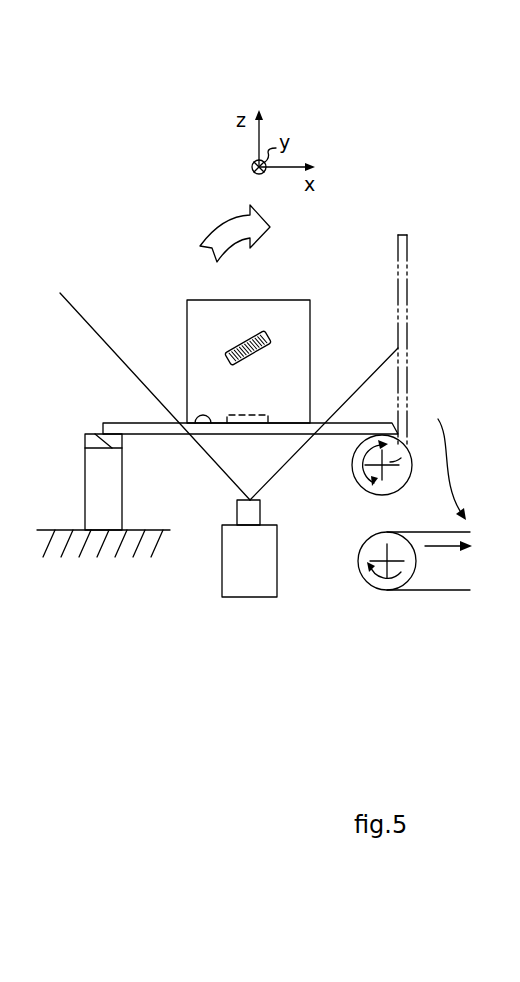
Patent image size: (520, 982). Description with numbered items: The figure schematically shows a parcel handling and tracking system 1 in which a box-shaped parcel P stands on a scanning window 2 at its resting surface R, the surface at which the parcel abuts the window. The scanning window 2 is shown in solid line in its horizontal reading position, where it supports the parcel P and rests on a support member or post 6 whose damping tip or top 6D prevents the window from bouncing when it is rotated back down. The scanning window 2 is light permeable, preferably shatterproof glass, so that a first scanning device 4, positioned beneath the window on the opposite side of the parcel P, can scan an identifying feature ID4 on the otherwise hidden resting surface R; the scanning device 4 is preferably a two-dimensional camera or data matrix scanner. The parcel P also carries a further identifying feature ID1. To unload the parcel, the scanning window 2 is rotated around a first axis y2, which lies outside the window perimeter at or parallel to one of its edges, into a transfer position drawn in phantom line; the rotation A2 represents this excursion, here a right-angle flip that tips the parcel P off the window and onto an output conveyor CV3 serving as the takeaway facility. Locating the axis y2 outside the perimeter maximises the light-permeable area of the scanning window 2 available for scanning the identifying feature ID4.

The parcel handling and tracking system 1 is at (392, 155).
The parcel P is at (215, 312).
The first identifier label ID1 is at (247, 336).
The identifying feature ID4 is at (246, 413).
The rotation A2 is at (320, 353).
The first axis y2 is at (420, 447).
The scanning window 2 is at (333, 440).
The support member or post 6 is at (98, 497).
The damping tip or top 6D is at (123, 438).
The resting surface R is at (212, 427).
The first scanning device 4 is at (258, 573).
The output conveyor CV3 is at (422, 590).